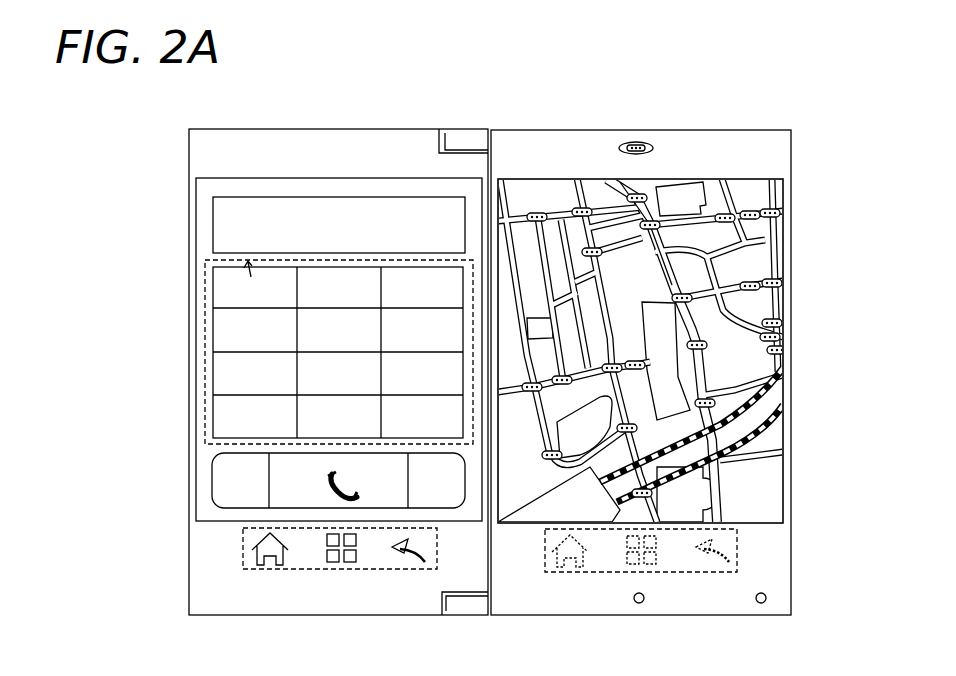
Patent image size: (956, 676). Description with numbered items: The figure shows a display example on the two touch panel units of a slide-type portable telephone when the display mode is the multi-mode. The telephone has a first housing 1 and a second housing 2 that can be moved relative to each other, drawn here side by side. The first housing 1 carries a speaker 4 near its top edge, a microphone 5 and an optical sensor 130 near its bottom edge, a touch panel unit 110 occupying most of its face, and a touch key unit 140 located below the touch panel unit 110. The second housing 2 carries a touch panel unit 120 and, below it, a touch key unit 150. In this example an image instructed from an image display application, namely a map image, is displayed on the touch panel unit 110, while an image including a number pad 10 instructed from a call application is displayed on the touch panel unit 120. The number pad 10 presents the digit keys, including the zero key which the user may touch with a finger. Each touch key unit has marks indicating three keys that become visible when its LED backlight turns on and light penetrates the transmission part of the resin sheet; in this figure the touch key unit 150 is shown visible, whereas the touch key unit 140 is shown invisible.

The first housing 1 is at (567, 143).
The second housing 2 is at (249, 143).
The speaker 4 is at (638, 140).
The microphone 5 is at (637, 605).
The number pad 10 is at (205, 378).
The touch panel unit 110 is at (694, 180).
The touch panel unit 120 is at (332, 178).
The optical sensor 130 is at (758, 605).
The touch key unit 140 is at (583, 573).
The touch key unit 150 is at (277, 570).